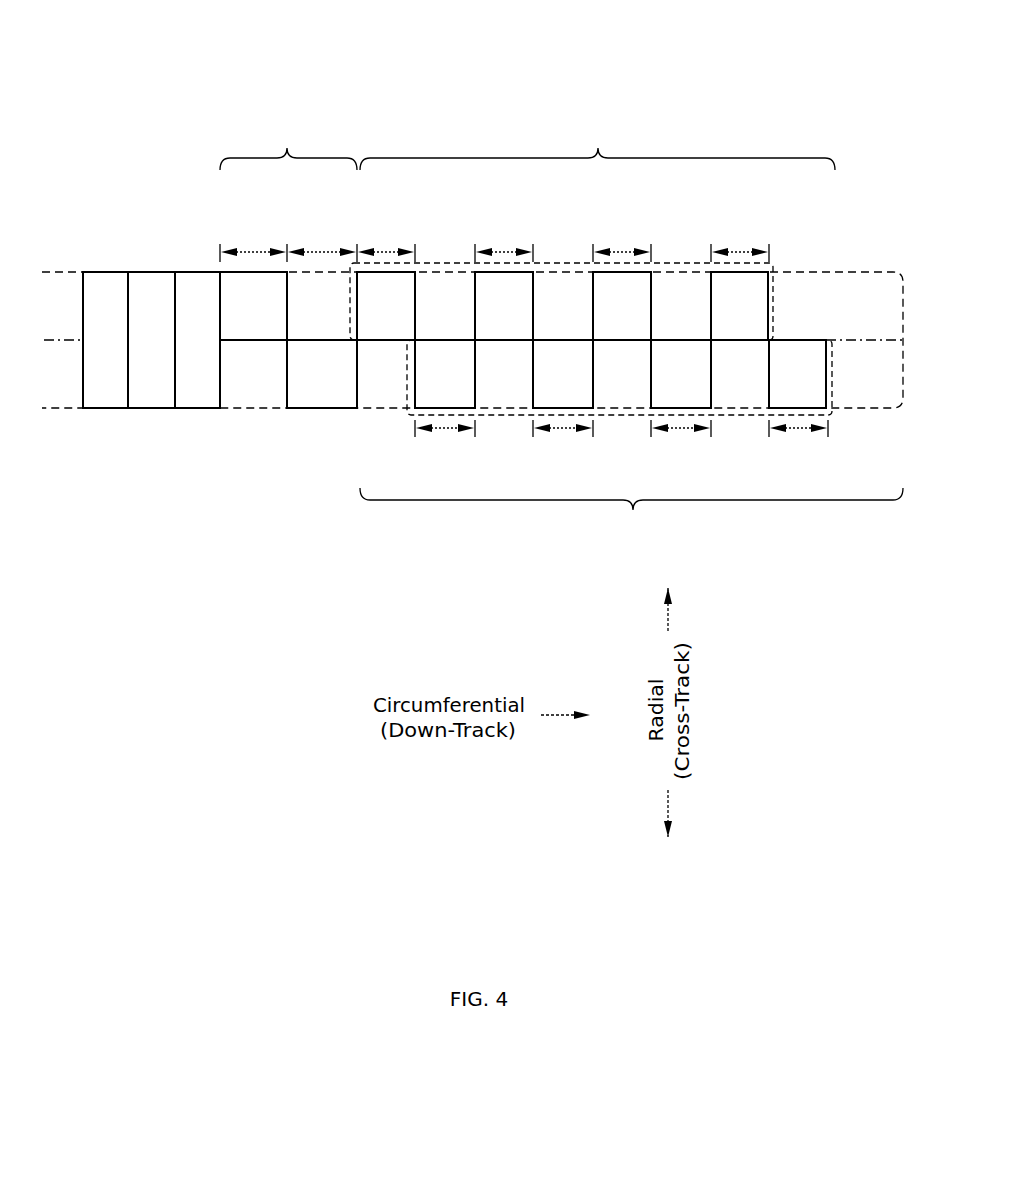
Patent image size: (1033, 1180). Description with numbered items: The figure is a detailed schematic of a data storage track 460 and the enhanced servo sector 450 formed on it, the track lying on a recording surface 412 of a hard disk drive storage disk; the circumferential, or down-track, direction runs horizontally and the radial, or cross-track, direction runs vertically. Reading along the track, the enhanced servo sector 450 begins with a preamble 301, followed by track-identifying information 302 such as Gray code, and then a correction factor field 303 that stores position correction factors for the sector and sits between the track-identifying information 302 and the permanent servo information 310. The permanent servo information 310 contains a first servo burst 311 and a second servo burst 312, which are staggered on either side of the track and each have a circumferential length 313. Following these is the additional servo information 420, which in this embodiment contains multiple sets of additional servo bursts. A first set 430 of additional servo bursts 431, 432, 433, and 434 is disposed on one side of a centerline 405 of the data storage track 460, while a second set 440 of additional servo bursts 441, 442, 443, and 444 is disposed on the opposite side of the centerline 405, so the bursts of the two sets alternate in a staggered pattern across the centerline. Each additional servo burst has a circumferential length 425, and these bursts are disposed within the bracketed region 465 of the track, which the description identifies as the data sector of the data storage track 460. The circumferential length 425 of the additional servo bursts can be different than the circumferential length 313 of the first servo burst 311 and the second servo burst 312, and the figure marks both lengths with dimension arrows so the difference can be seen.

The preamble 301 is at (124, 351).
The track-identifying information 302 is at (170, 351).
The correction factor field 303 is at (216, 351).
The permanent servo information 310 is at (288, 150).
The first servo burst 311 is at (272, 317).
The second servo burst 312 is at (341, 386).
The circumferential length 313 is at (248, 246).
The centerline 405 is at (842, 338).
The recording surface 412 is at (434, 80).
The additional servo information 420 is at (599, 150).
The circumferential length 425 is at (384, 246).
The first set of additional servo bursts 430 is at (774, 310).
The additional servo burst 431 is at (405, 317).
The additional servo burst 432 is at (523, 317).
The additional servo burst 433 is at (641, 317).
The additional servo burst 434 is at (758, 317).
The second set of additional servo bursts 440 is at (836, 384).
The additional servo burst 441 is at (464, 386).
The additional servo burst 442 is at (582, 386).
The additional servo burst 443 is at (700, 386).
The additional servo burst 444 is at (816, 386).
The enhanced servo sector 450 is at (197, 65).
The data storage track 460 is at (904, 340).
The extended burst region 465 is at (633, 505).